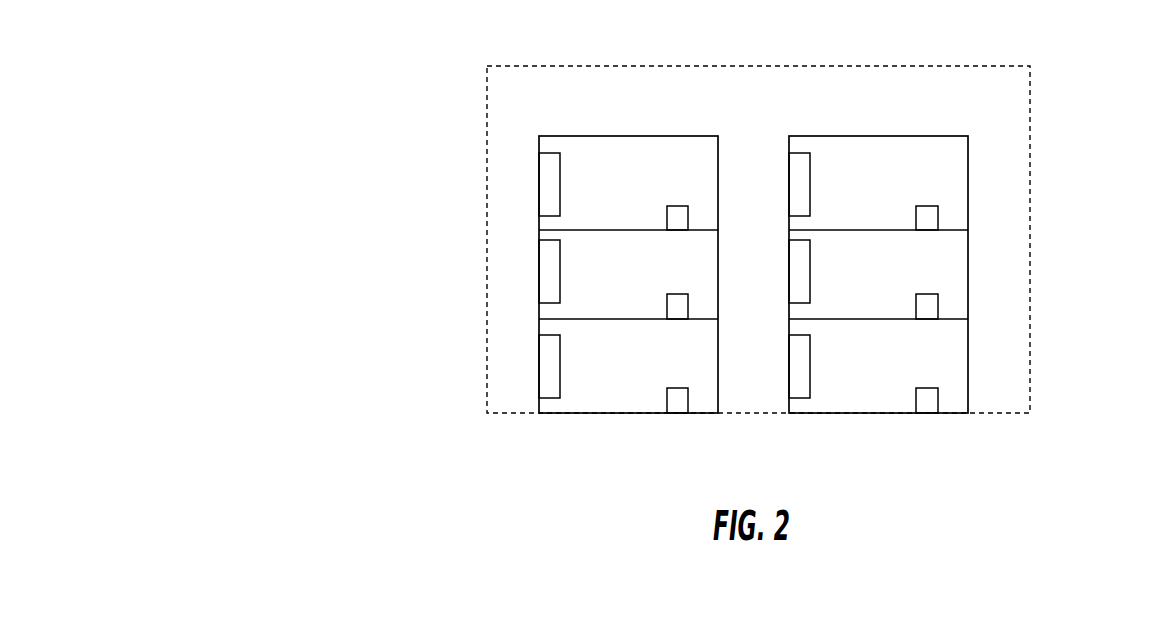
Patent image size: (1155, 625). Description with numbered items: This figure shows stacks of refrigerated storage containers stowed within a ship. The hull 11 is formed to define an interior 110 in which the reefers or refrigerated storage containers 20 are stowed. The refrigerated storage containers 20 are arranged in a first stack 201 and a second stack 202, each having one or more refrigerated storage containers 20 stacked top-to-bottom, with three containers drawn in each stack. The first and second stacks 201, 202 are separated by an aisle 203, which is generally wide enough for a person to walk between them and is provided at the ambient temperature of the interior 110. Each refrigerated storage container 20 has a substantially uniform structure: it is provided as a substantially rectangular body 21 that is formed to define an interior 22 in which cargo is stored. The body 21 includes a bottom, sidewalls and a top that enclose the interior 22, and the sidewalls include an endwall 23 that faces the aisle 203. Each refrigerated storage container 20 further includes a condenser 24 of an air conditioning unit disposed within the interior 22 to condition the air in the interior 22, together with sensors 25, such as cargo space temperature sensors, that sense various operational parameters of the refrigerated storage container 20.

The hull 11 is at (487, 187).
The interior 110 is at (557, 104).
The refrigerated storage container 20 is at (935, 313).
The first stack 201 is at (511, 312).
The second stack 202 is at (941, 313).
The aisle 203 is at (743, 150).
The body 21 is at (539, 257).
The interior 22 is at (623, 268).
The endwall 23 is at (789, 270).
The condenser 24 is at (802, 280).
The sensors 25 is at (680, 305).